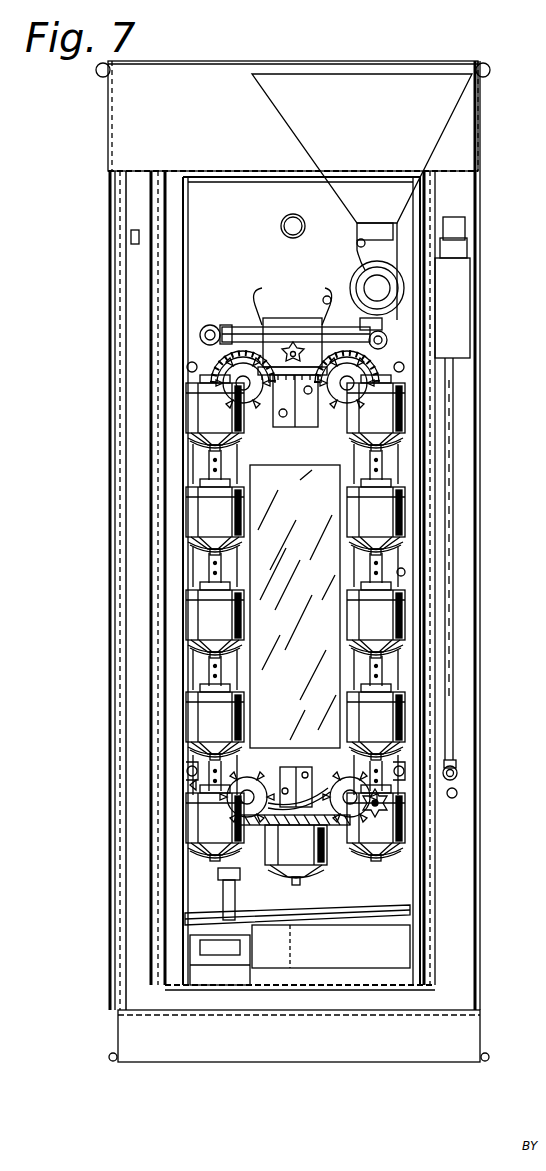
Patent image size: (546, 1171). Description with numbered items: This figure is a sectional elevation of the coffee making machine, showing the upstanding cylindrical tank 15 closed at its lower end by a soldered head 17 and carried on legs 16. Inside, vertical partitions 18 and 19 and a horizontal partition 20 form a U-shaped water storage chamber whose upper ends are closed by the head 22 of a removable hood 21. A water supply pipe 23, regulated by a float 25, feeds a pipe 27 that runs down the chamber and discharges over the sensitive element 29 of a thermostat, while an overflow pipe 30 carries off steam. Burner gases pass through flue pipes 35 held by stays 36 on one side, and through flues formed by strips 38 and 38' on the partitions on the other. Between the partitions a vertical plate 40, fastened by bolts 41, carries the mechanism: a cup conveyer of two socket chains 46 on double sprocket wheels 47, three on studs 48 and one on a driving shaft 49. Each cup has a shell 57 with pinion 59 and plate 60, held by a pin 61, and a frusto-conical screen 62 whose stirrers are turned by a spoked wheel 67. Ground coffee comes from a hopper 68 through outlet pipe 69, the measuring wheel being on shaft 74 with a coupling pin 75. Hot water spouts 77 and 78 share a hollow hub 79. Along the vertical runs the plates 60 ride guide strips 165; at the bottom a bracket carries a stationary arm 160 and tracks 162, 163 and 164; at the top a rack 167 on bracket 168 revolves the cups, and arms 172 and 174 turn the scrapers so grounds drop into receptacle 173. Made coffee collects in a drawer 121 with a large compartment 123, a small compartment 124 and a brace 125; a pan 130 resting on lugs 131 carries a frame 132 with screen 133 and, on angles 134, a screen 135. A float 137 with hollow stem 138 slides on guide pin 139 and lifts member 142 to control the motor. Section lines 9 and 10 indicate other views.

The section line 10- 10 is at (306, 48).
The section line 9- 9 is at (497, 757).
The legs 16 is at (112, 893).
The head 17 is at (478, 155).
The tank 15 is at (112, 500).
The vertical partition 18 is at (175, 698).
The vertical partition 19 is at (428, 662).
The horizontal partition 20 is at (190, 992).
The hood 21 is at (108, 110).
The head 22 is at (183, 172).
The water supply pipe 23 is at (478, 243).
The float 25 is at (470, 300).
The pipe 27 is at (455, 632).
The sensitive element 29 is at (457, 793).
The overflow pipe 30 is at (130, 238).
The flue pipes 35 is at (125, 316).
The stays 36 is at (112, 215).
The metal strip 38 is at (455, 566).
The strip 38' is at (118, 844).
The vertical plate 40 is at (207, 228).
The bolts 41 is at (404, 366).
The socket chains 46 is at (210, 465).
The double sprocket wheels 47 is at (270, 727).
The studs 48 is at (375, 565).
The shaft 49 is at (287, 379).
The shell 57 is at (295, 584).
The pinion 59 is at (445, 852).
The plate 60 is at (488, 826).
The pin 61 is at (300, 745).
The screen 62 is at (282, 308).
The spoked wheel 67 is at (312, 316).
The hopper 68 is at (362, 197).
The outlet pipe 69 is at (385, 258).
The shaft 74 is at (377, 288).
The pin 75 is at (398, 286).
The dispensing spout 77 is at (218, 328).
The dispensing spout 78 is at (387, 338).
The hollow hub 79 is at (198, 300).
The drawer 121 is at (385, 992).
The large compartment 123 is at (420, 952).
The small compartment 124 is at (205, 992).
The brace 125 is at (412, 956).
The pan 130 is at (331, 946).
The lugs 131 is at (190, 942).
The rectangular frame 132 is at (262, 940).
The screen 133 is at (216, 959).
The angles 134 is at (198, 914).
The screen 135 is at (375, 912).
The float 137 is at (215, 992).
The hollow stem 138 is at (242, 897).
The guide pin 139 is at (222, 992).
The member 142 is at (218, 874).
The stationary arm 160 is at (292, 870).
The track 162 is at (376, 823).
The track 163 is at (298, 826).
The track 164 is at (315, 760).
The guide strips 165 is at (210, 662).
The rack 167 is at (278, 327).
The bracket 168 is at (295, 415).
The arm 172 is at (266, 300).
The receptacle 173 is at (295, 606).
The arm 174 is at (326, 297).